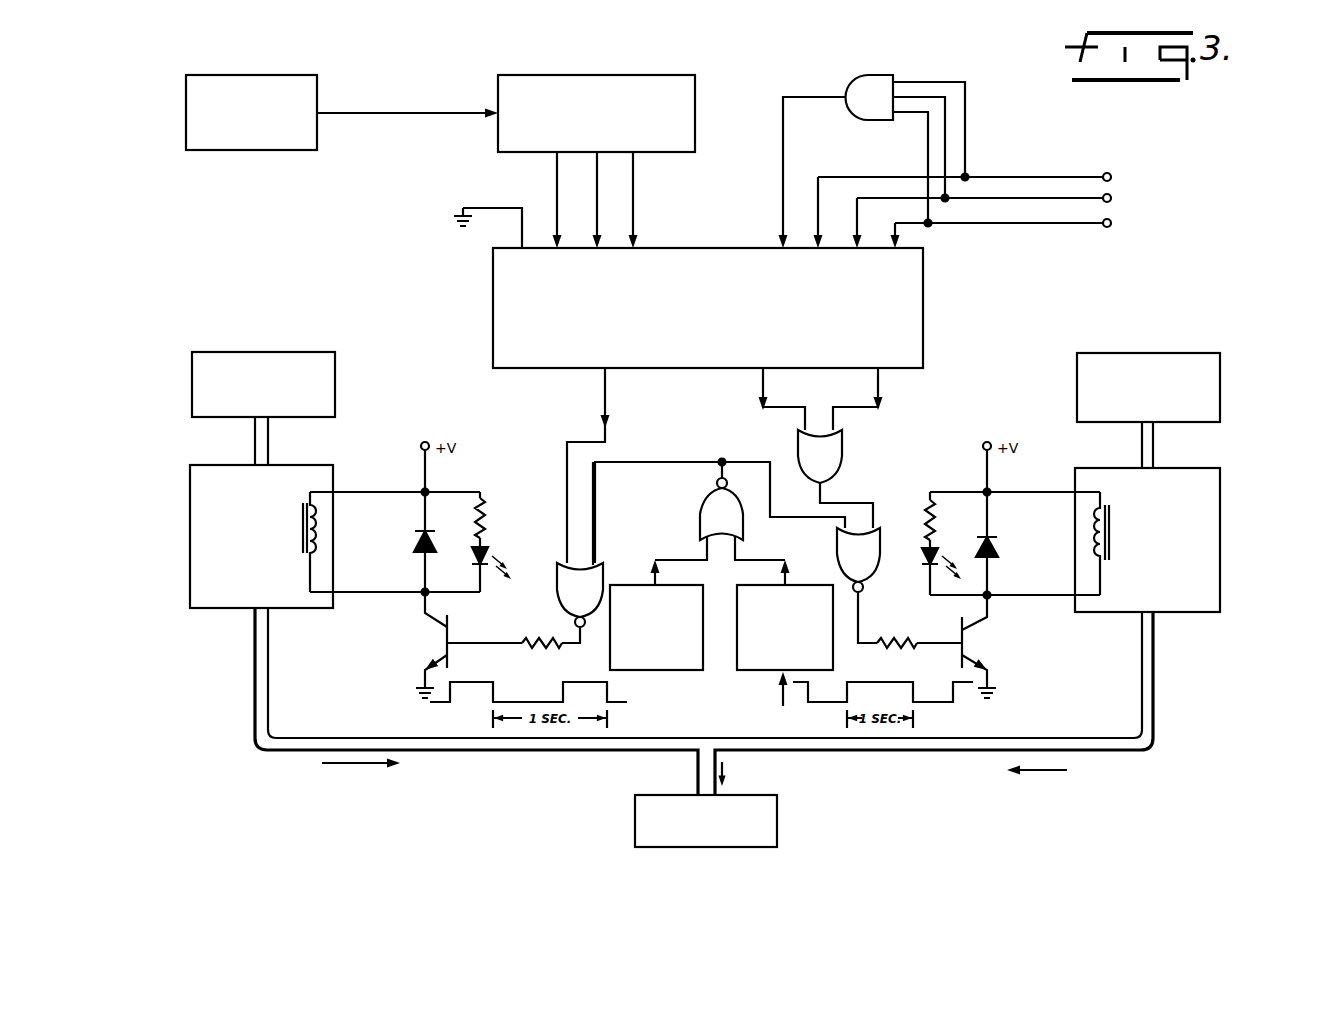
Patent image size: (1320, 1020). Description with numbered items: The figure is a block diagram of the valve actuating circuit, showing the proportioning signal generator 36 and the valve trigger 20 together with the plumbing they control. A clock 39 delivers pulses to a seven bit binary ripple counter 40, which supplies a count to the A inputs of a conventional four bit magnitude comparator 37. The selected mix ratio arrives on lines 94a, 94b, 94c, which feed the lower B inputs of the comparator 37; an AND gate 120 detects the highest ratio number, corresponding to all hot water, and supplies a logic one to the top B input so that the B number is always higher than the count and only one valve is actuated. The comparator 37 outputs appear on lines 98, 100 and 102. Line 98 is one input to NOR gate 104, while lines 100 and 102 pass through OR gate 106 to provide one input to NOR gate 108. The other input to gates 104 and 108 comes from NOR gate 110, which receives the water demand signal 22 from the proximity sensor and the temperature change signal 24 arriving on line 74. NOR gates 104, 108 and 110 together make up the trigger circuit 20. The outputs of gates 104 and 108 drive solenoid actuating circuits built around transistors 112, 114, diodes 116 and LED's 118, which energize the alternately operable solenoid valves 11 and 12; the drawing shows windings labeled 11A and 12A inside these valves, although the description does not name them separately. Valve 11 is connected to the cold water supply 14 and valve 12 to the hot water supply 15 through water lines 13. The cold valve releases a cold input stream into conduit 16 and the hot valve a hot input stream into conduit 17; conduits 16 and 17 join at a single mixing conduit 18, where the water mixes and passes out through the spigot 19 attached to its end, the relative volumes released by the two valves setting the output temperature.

The clock 39 is at (238, 150).
The counter 40 is at (640, 75).
The proportioning signal generator 36 is at (535, 198).
The comparator 37 is at (923, 300).
The AND gate 120 is at (866, 80).
The line 94a is at (1075, 228).
The line 94b is at (1088, 197).
The line 94c is at (1082, 180).
The cold water supply 14 is at (335, 372).
The hot water supply 15 is at (1220, 374).
The water lines 13 is at (270, 440).
The solenoid valve 11 is at (203, 610).
The solenoid valve 12 is at (1192, 614).
The solenoid coil 11A is at (323, 524).
The solenoid coil 12A is at (1092, 543).
The diodes 116 is at (418, 549).
The LED's 118 is at (492, 556).
The transistor 112 is at (448, 641).
The transistor 114 is at (978, 645).
The line 98 is at (603, 405).
The line 100 is at (758, 400).
The line 102 is at (882, 401).
The valve trigger 20 is at (631, 446).
The NOR gate 104 is at (604, 573).
The OR gate 106 is at (843, 446).
The NOR gate 108 is at (836, 553).
The NOR gate 110 is at (717, 486).
The water demand signal 22 is at (651, 672).
The temperature change signal 24 is at (768, 672).
The line 74 is at (781, 712).
The conduit 16 is at (254, 678).
The conduit 17 is at (1154, 688).
The mixing conduit 18 is at (697, 774).
The spigot 19 is at (777, 821).